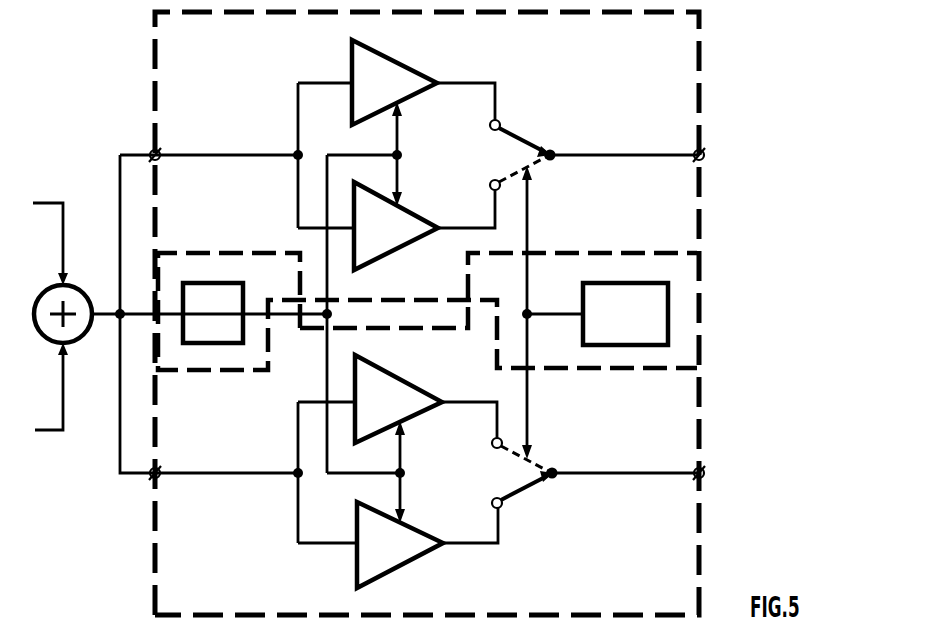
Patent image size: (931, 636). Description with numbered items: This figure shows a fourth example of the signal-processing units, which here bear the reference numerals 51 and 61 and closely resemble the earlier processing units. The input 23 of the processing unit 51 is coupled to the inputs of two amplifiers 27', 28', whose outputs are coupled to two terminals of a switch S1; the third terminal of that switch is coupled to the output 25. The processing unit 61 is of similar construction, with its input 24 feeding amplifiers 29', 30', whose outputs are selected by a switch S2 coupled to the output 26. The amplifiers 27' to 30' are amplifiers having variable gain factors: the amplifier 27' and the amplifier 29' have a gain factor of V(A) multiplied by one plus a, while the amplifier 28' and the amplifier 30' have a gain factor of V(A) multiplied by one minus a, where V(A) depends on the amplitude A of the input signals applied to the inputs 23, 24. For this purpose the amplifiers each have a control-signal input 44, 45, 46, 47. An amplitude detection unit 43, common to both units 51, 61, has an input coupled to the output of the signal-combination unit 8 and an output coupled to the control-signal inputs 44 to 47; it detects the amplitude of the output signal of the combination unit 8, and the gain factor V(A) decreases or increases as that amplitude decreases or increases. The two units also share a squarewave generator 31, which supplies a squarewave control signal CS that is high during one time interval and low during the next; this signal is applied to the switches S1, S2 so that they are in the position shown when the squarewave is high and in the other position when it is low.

The signal-combination unit 8 is at (44, 288).
The input 23 is at (149, 148).
The input 24 is at (152, 485).
The output 25 is at (704, 160).
The output 26 is at (705, 474).
The variable-gain amplifier 27' is at (394, 77).
The variable-gain amplifier 28' is at (397, 238).
The variable-gain amplifier 29' is at (398, 398).
The variable-gain amplifier 30' is at (400, 554).
The squarewave generator 31 is at (582, 330).
The amplitude detection unit 43 is at (236, 280).
The control-signal input 44 is at (401, 108).
The control-signal input 45 is at (402, 199).
The control-signal input 46 is at (403, 428).
The control-signal input 47 is at (404, 519).
The signal-processing unit 51 is at (458, 313).
The signal-processing unit 61 is at (703, 508).
The switch S1 is at (523, 113).
The switch S2 is at (527, 491).
The squarewave control signal CS is at (552, 313).